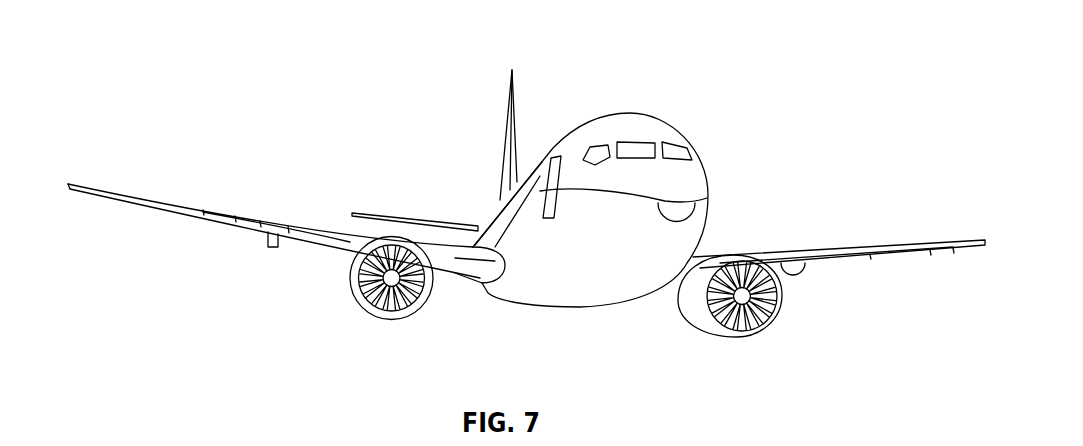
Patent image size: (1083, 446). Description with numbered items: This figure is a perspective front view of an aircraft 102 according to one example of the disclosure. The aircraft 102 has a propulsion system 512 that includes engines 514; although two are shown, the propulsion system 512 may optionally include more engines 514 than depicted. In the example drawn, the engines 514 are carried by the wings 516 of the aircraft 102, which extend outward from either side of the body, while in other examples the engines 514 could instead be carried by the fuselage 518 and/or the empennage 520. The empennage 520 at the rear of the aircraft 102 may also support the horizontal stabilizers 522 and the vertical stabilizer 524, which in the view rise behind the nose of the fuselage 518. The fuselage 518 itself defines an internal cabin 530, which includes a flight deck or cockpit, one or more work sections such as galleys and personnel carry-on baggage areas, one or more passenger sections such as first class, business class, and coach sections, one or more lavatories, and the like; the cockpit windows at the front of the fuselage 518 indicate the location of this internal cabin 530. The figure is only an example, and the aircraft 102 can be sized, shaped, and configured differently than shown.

The aircraft 102 is at (526, 215).
The propulsion system 512 is at (341, 303).
The engines 514 is at (534, 318).
The wings 516 is at (193, 209).
The fuselage 518 is at (629, 179).
The empennage 520 is at (500, 200).
The horizontal stabilizers 522 is at (385, 214).
The vertical stabilizer 524 is at (507, 108).
The internal cabin 530 is at (637, 148).